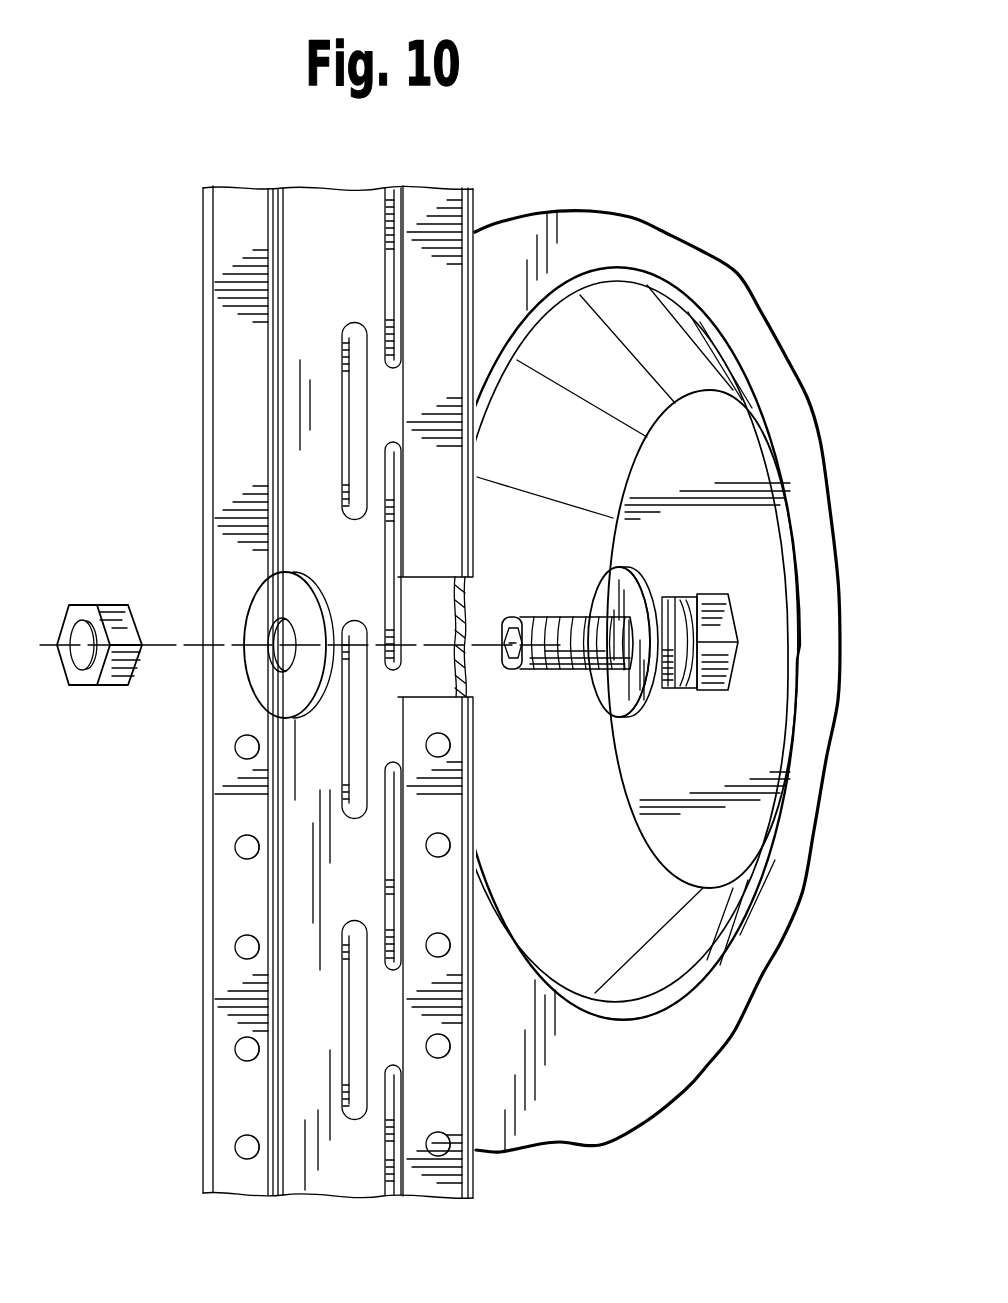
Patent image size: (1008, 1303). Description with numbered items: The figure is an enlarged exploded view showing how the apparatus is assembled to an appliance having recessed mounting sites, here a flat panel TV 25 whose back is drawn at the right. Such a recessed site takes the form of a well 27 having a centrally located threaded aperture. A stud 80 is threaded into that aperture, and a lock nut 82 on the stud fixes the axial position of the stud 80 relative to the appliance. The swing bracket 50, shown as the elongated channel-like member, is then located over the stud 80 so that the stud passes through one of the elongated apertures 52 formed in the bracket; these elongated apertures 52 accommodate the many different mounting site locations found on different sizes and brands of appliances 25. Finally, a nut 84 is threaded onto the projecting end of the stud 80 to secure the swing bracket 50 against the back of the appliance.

The flat panel TV 25 is at (620, 1085).
The well 27 is at (755, 832).
The swing bracket 50 is at (248, 410).
The elongated apertures 52 is at (348, 478).
The stud 80 is at (548, 617).
The lock nut 82 is at (735, 622).
The nut 84 is at (65, 618).